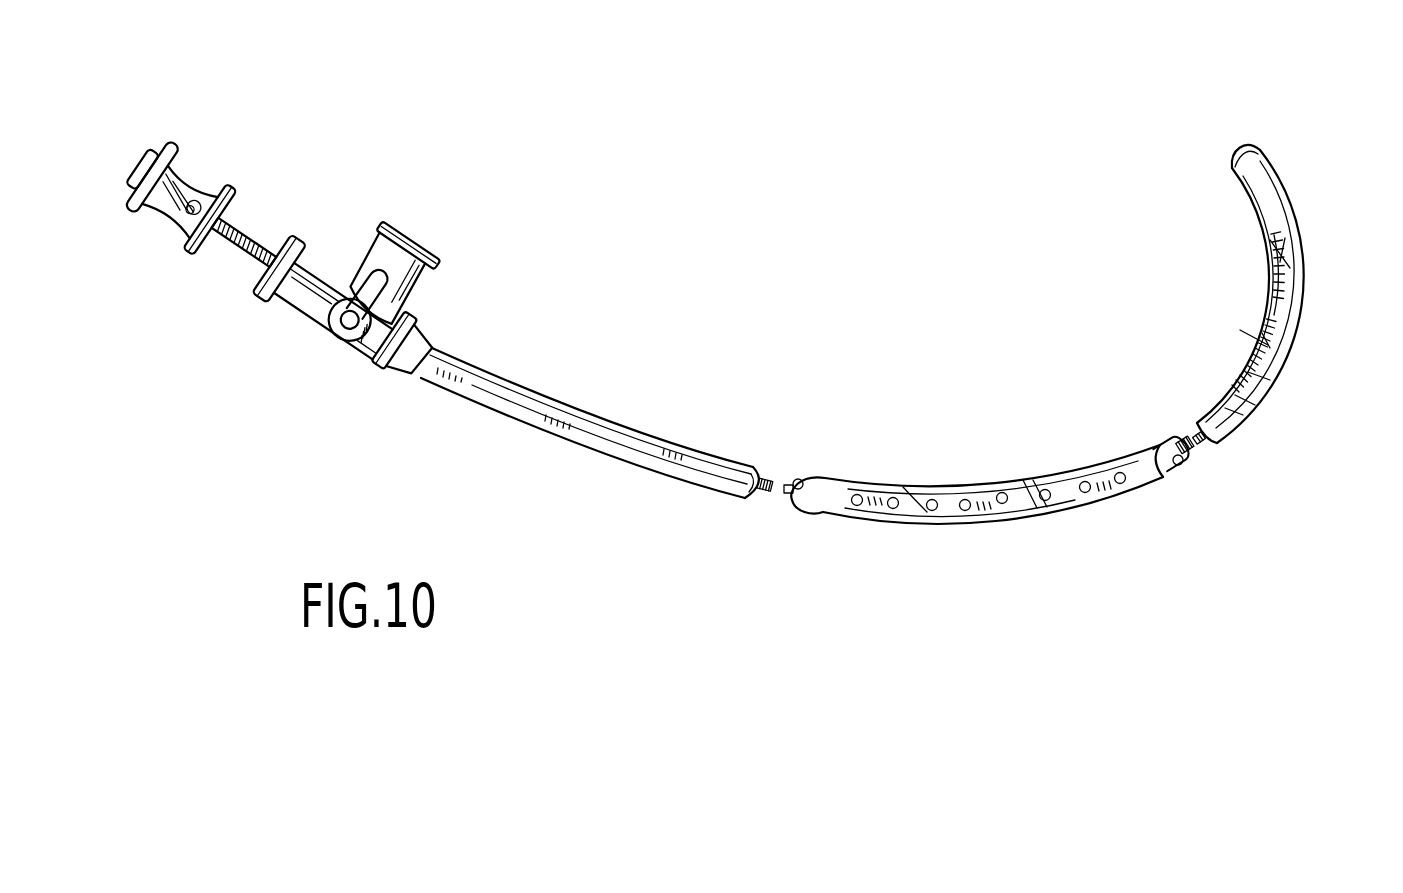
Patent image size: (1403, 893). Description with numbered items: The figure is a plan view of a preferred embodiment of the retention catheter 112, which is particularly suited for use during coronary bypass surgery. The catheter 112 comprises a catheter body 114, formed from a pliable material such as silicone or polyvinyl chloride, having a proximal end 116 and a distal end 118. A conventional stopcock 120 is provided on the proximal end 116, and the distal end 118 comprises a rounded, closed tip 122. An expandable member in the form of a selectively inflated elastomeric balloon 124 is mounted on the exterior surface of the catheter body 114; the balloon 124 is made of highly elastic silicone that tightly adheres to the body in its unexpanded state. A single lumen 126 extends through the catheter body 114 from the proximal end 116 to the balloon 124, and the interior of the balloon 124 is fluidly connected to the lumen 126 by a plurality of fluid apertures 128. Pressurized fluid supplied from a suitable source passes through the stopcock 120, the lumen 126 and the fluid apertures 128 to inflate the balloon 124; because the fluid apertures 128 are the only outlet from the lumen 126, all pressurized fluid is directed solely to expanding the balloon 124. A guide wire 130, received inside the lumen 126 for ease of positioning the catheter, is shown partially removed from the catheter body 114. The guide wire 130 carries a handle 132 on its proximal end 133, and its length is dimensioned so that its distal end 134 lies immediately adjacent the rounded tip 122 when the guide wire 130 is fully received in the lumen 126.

The retention catheter 112 is at (808, 395).
The catheter body 114 is at (718, 458).
The proximal end 116 is at (523, 390).
The distal end 118 is at (1285, 185).
The stopcock 120 is at (427, 255).
The rounded, closed tip 122 is at (1245, 143).
The balloon 124 is at (962, 486).
The lumen 126 is at (794, 480).
The fluid apertures 128 is at (1075, 470).
The guide wire 130 is at (763, 503).
The handle 132 is at (172, 144).
The proximal end 133 is at (254, 243).
The distal end 134 is at (1283, 250).